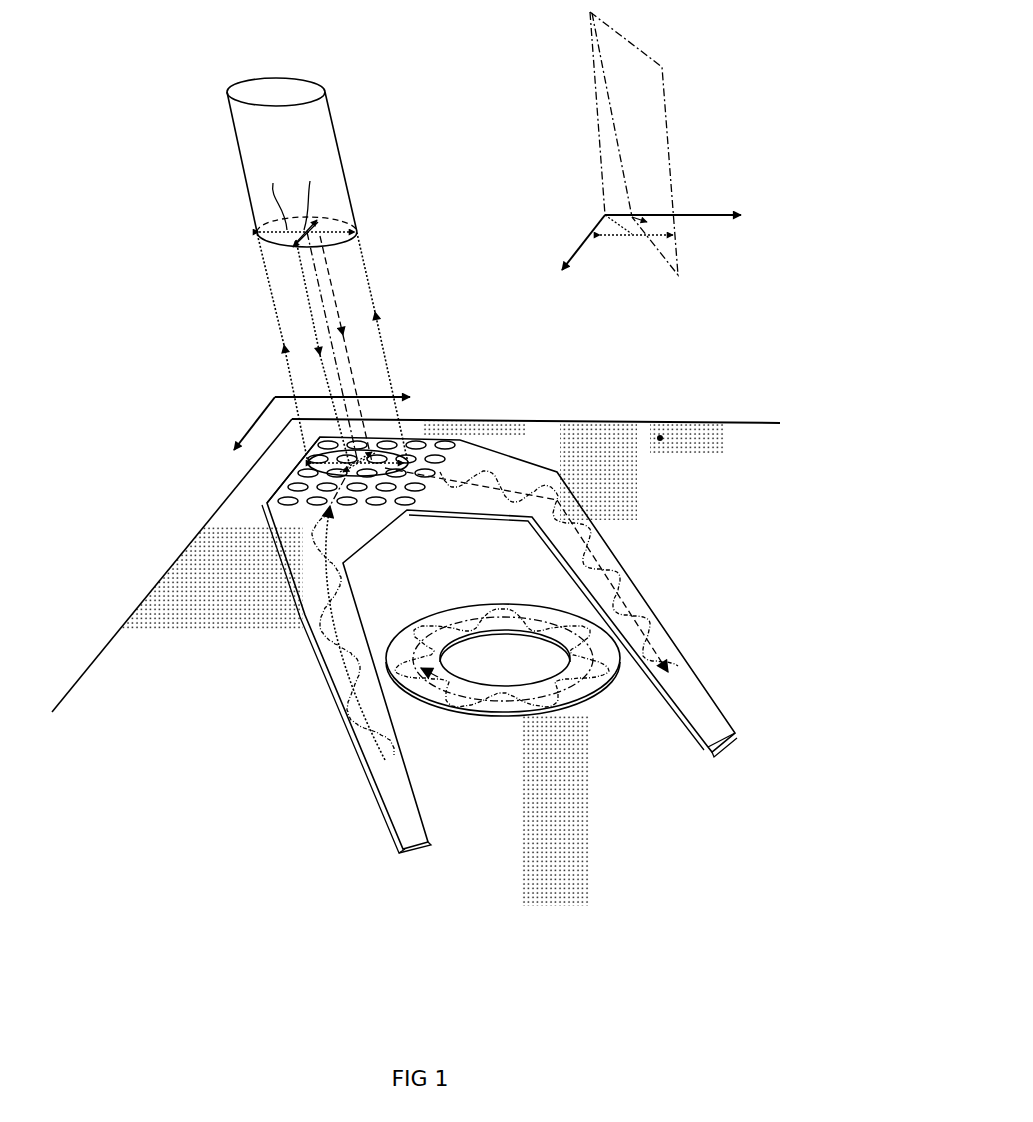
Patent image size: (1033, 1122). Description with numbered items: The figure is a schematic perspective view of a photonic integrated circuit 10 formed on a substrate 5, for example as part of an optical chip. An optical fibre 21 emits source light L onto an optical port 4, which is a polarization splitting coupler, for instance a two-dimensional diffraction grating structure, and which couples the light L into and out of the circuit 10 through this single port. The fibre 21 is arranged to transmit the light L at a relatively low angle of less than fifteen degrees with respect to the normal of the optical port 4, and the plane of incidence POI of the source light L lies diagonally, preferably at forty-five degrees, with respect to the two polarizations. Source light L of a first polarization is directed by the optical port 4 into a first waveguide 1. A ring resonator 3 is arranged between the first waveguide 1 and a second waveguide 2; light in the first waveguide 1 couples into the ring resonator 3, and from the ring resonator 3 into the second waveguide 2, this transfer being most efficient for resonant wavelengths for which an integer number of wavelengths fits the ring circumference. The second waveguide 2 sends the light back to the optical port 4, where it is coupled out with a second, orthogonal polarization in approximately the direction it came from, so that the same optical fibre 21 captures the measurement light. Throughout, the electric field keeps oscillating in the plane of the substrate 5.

The photonic integrated circuit 10 is at (160, 380).
The optical fibre 21 is at (349, 181).
The light L is at (384, 290).
The optical port 4 is at (444, 414).
The first waveguide 1 is at (575, 500).
The substrate 5 is at (661, 437).
The second waveguide 2 is at (303, 613).
The ring resonator 3 is at (538, 732).
The plane of incidence POI is at (680, 122).